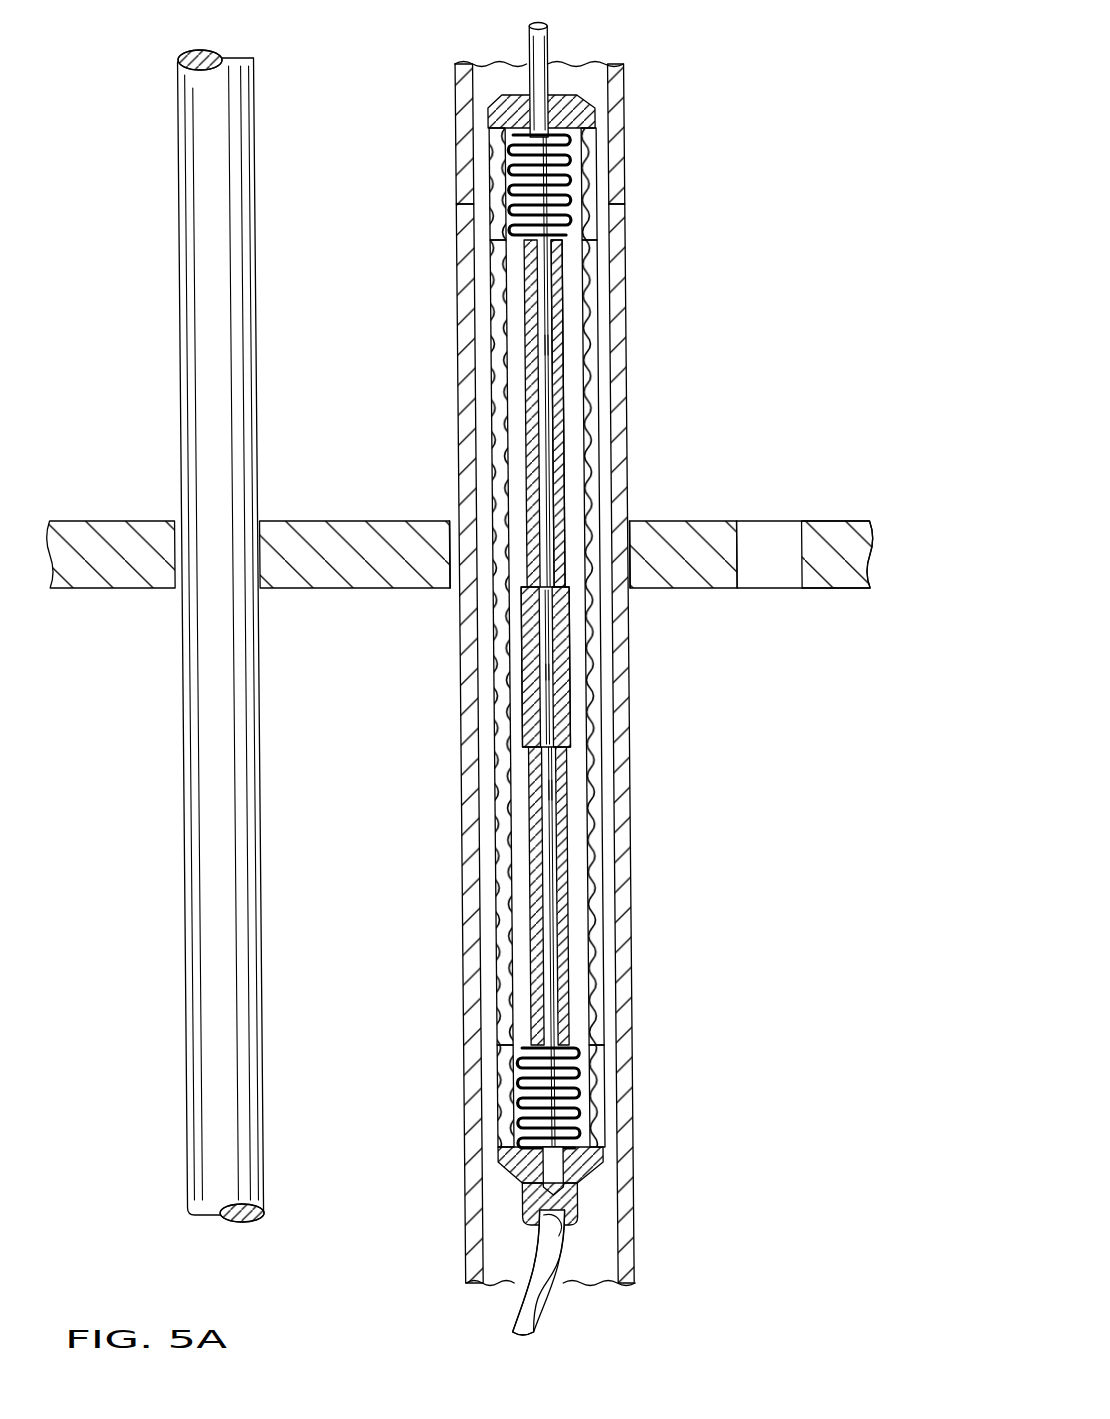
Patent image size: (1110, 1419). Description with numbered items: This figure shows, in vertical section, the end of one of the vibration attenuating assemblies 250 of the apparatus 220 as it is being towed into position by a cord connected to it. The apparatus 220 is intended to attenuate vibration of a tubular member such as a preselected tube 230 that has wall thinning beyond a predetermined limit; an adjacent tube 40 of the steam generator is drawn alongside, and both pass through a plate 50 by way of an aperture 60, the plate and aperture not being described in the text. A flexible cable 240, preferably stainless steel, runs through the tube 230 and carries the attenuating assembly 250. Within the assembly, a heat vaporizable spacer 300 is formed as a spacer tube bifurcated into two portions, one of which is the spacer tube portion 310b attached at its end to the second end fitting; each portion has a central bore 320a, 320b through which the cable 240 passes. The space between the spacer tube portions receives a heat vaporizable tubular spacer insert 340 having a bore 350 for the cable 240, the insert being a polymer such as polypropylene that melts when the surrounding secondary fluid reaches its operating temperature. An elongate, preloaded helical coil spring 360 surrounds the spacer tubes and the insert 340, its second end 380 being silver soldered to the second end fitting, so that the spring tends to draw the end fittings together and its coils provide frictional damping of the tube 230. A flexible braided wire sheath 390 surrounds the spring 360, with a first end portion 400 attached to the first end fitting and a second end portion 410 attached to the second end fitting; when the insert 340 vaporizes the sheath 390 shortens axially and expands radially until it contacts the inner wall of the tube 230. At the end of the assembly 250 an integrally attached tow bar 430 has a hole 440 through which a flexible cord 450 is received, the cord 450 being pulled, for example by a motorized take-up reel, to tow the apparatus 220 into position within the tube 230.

The tube 40 is at (226, 94).
The support plate 50 is at (850, 520).
The aperture in plate 60 is at (622, 540).
The apparatus 220 is at (489, 298).
The preselected tube 230 is at (456, 94).
The flexible cable 240 is at (551, 37).
The vibration attenuating assembly 250 is at (457, 354).
The heat vaporizable spacer 300 is at (568, 456).
The spacer tube portion 310b is at (566, 289).
The central bore 320a is at (562, 790).
The central bore 320b is at (566, 347).
The spacer insert 340 is at (572, 628).
The bore 350 is at (557, 673).
The helical coil spring 360 is at (576, 206).
The second end of spring 380 is at (592, 110).
The flexible braided sheath 390 is at (494, 441).
The first end portion of sheath 400 is at (508, 1078).
The second end portion of sheath 410 is at (494, 201).
The tow bar 430 is at (520, 1218).
The hole 440 is at (582, 1215).
The flexible cord 450 is at (528, 1313).